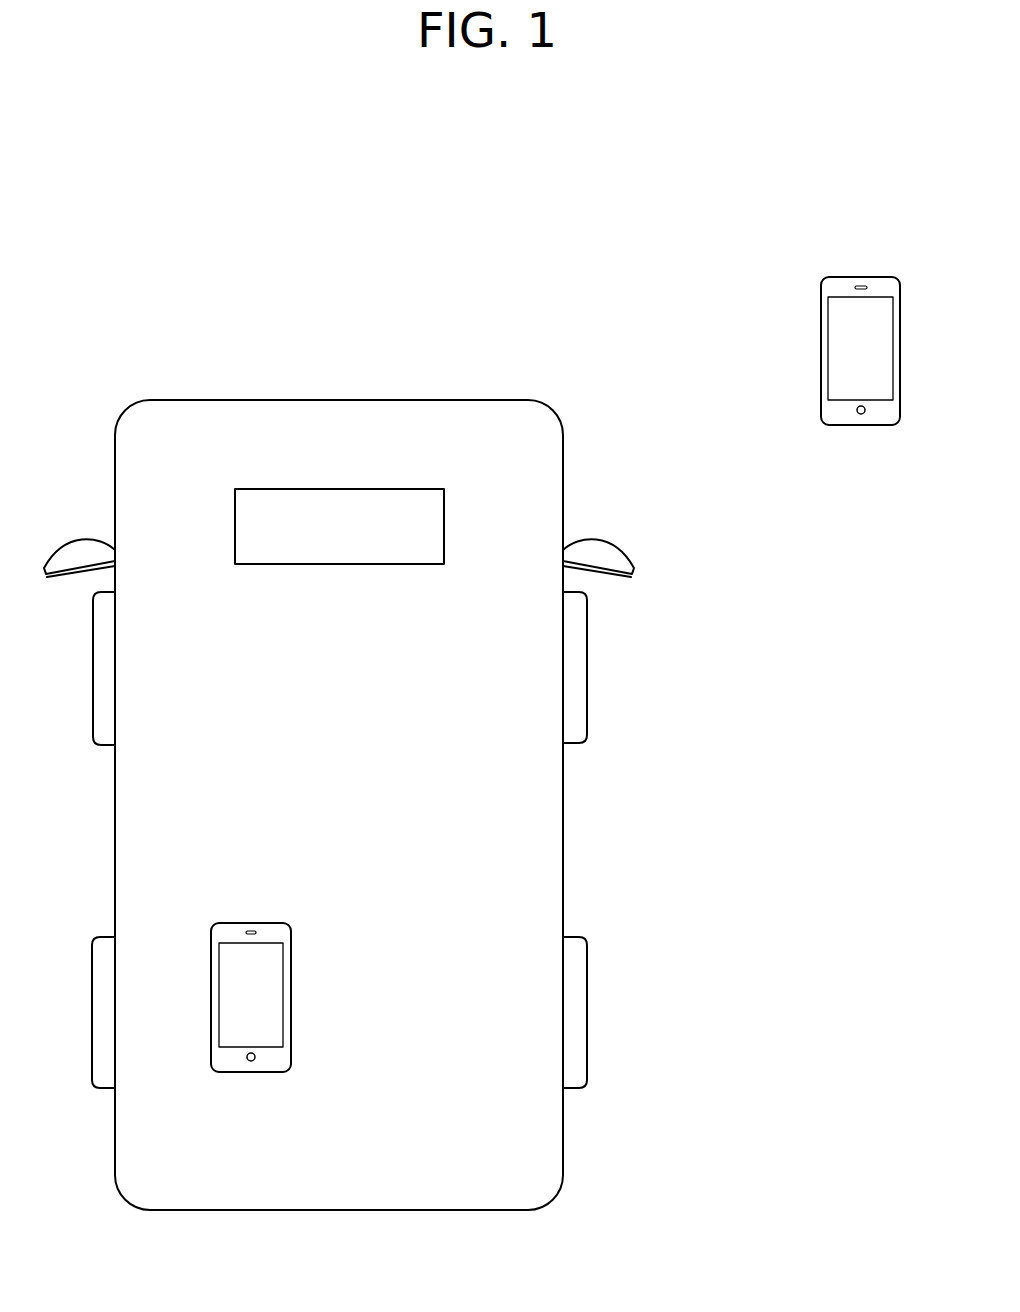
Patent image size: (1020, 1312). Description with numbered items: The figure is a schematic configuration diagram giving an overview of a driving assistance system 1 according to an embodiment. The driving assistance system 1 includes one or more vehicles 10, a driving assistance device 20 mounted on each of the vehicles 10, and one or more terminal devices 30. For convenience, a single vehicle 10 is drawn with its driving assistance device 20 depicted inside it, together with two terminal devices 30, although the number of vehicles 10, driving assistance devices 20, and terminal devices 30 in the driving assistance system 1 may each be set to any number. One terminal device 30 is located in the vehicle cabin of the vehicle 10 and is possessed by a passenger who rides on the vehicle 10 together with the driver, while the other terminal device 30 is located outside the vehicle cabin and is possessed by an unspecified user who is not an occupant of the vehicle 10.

The driving assistance system 1 is at (776, 870).
The vehicle 10 is at (326, 400).
The driving assistance device 20 is at (343, 543).
The terminal device 30 is at (250, 923).